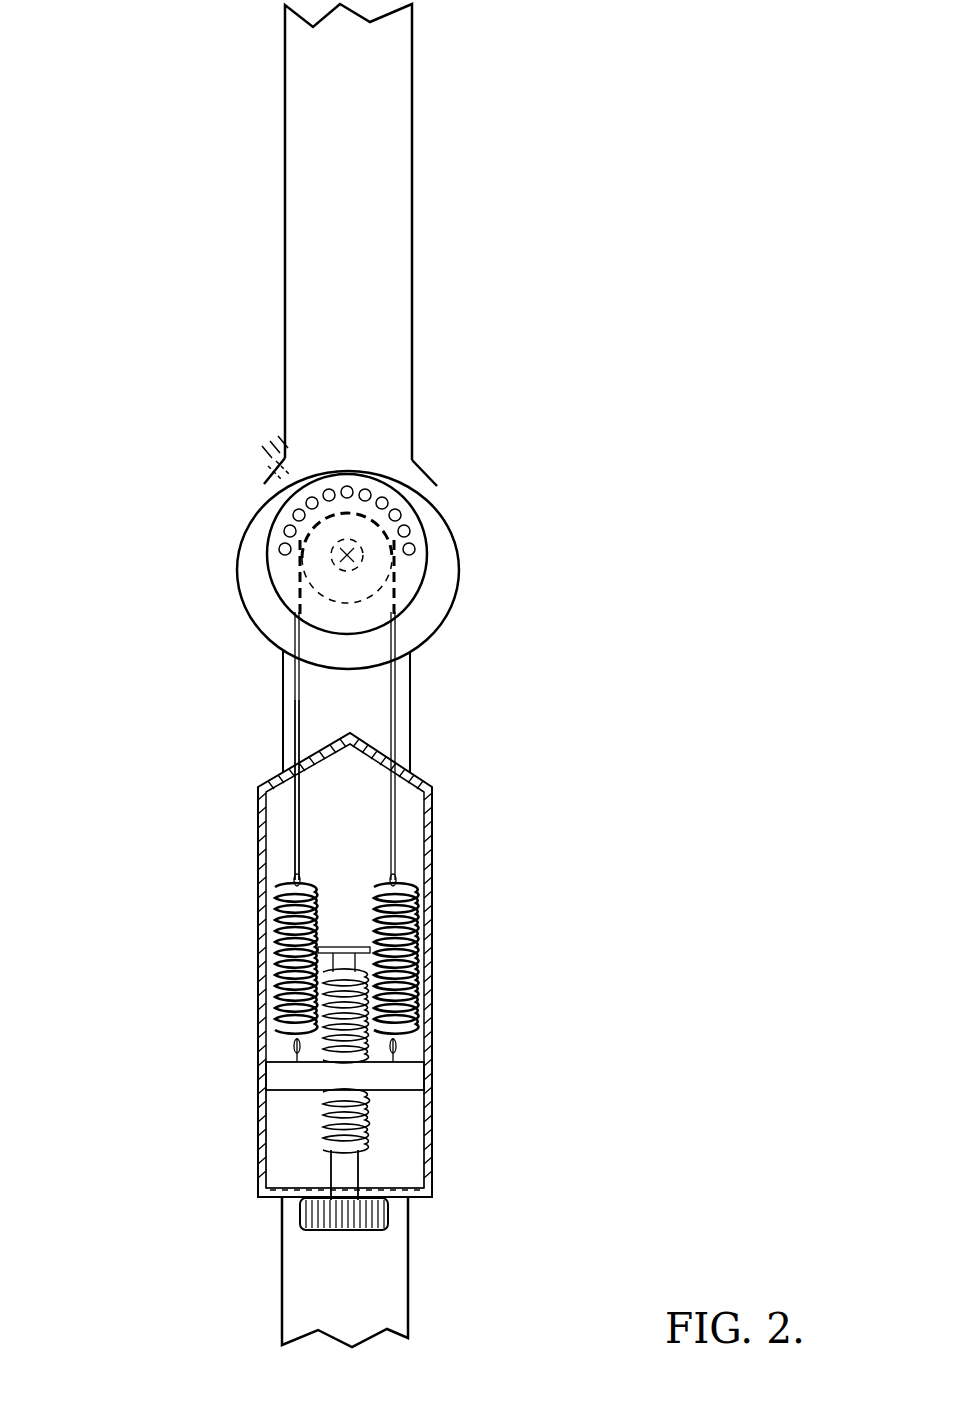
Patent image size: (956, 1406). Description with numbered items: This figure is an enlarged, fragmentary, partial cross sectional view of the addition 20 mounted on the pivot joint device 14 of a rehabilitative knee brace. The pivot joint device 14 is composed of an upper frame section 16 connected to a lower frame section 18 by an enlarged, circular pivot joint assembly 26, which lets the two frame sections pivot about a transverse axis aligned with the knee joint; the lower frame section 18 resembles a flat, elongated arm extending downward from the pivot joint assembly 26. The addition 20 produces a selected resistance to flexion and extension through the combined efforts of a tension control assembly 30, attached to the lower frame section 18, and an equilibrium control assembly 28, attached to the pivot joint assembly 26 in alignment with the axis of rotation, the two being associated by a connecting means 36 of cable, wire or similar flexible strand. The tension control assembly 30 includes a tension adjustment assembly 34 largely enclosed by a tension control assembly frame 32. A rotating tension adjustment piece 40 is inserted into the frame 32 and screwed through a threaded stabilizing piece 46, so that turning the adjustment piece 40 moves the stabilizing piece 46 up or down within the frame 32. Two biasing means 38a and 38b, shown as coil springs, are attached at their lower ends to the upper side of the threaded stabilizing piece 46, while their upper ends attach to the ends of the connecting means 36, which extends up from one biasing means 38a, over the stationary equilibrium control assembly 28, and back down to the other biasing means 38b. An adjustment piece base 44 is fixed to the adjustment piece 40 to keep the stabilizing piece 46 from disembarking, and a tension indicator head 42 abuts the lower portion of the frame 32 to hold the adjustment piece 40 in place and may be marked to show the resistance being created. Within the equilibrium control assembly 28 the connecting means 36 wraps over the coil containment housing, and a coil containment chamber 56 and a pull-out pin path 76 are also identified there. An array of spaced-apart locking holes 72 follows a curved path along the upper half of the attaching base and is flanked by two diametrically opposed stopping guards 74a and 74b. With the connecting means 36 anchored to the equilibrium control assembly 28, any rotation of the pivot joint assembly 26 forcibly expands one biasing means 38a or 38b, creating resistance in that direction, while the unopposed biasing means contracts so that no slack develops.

The pivot joint device 14 is at (733, 143).
The upper frame section 16 is at (365, 322).
The lower frame section 18 is at (365, 1268).
The addition to a pivot joint device 20 is at (603, 725).
The pivot joint assembly 26 is at (223, 505).
The equilibrium control assembly 28 is at (425, 512).
The tension control assembly 30 is at (475, 985).
The tension control assembly frame 32 is at (434, 872).
The tension adjustment assembly 34 is at (388, 1128).
The connecting means 36 is at (294, 706).
The biasing means 38a is at (290, 975).
The biasing means 38b is at (383, 1010).
The tension adjustment piece 40 is at (330, 1143).
The tension indicator head 42 is at (300, 1213).
The adjustment piece base 44 is at (343, 945).
The threaded stabilizing piece 46 is at (395, 1078).
The coil containment chamber 56 is at (397, 645).
The locking holes 72 is at (258, 433).
The stopping guard 74a is at (300, 562).
The stopping guard 74b is at (396, 565).
The pull-out pin path 76 is at (386, 590).